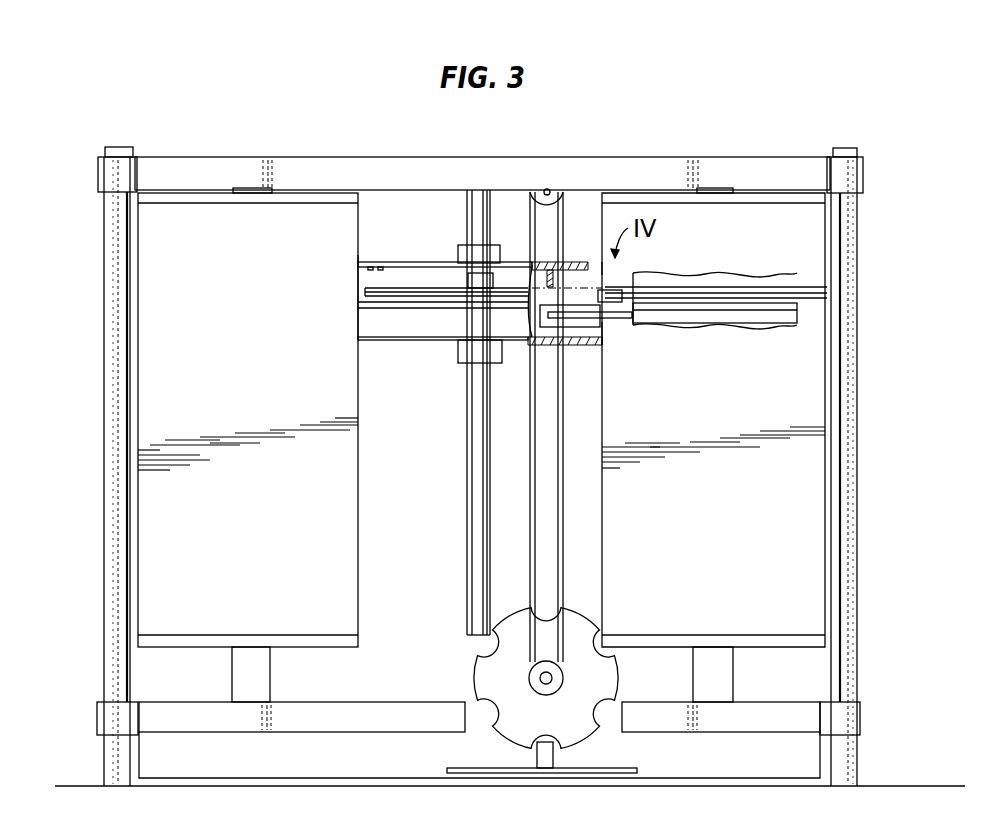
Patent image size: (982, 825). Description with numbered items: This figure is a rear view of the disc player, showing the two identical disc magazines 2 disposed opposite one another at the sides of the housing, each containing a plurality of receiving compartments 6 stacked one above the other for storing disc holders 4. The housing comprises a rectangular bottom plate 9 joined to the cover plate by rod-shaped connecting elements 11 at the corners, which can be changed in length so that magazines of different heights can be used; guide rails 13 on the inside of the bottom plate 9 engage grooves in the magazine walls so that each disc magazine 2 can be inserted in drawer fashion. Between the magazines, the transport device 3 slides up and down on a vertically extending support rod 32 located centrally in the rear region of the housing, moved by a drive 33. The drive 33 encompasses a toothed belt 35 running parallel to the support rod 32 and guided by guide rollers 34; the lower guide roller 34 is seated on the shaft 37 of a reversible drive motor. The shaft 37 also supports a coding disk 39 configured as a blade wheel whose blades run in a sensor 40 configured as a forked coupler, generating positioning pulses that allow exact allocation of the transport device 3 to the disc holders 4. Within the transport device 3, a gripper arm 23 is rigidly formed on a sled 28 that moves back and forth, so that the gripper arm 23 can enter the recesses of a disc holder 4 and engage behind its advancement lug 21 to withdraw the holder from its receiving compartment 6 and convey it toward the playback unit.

The disc magazine 2 is at (138, 580).
The transport device 3 is at (468, 254).
The disc holder 4 is at (828, 288).
The receiving compartment 6 is at (790, 317).
The bottom plate 9 is at (329, 717).
The connecting element 11 is at (113, 501).
The guide rail 13 is at (260, 668).
The advancement lug 21 is at (597, 266).
The gripper arm 23 is at (606, 291).
The sled 28 is at (585, 322).
The support rod 32 is at (473, 478).
The drive 33 is at (573, 520).
The guide roller 34 is at (528, 688).
The toothed belt 35 is at (563, 418).
The shaft 37 is at (546, 685).
The coding disk 39 is at (577, 730).
The sensor 40 is at (538, 762).